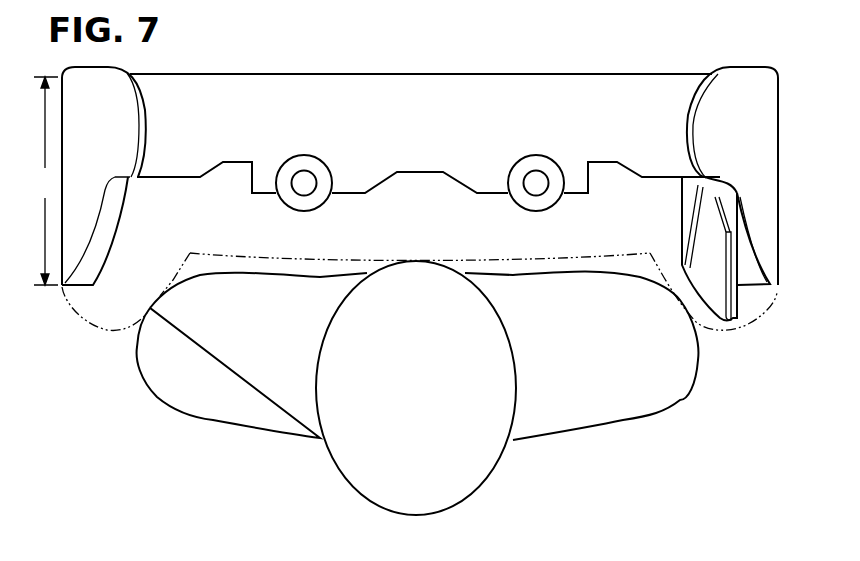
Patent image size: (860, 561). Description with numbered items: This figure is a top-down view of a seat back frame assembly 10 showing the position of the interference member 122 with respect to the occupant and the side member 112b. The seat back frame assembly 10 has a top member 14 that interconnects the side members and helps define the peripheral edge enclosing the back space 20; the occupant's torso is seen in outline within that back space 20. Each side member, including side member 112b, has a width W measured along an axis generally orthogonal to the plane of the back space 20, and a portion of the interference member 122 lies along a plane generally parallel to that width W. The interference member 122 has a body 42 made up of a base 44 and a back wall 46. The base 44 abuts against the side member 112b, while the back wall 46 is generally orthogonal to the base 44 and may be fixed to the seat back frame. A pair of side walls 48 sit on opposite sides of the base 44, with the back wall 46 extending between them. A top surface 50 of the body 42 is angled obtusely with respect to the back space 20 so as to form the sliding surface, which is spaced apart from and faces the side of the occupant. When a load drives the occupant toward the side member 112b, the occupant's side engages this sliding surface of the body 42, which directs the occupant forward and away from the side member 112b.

The seat back frame assembly 10 is at (757, 53).
The top member 14 is at (420, 83).
The back space 20 is at (463, 88).
The width W is at (46, 181).
The side member 112b is at (766, 116).
The back wall 46 is at (710, 178).
The side walls 48 is at (712, 235).
The base 44 is at (740, 277).
The body 42 is at (755, 303).
The interference member 122 is at (681, 302).
The top surface 50 is at (705, 305).